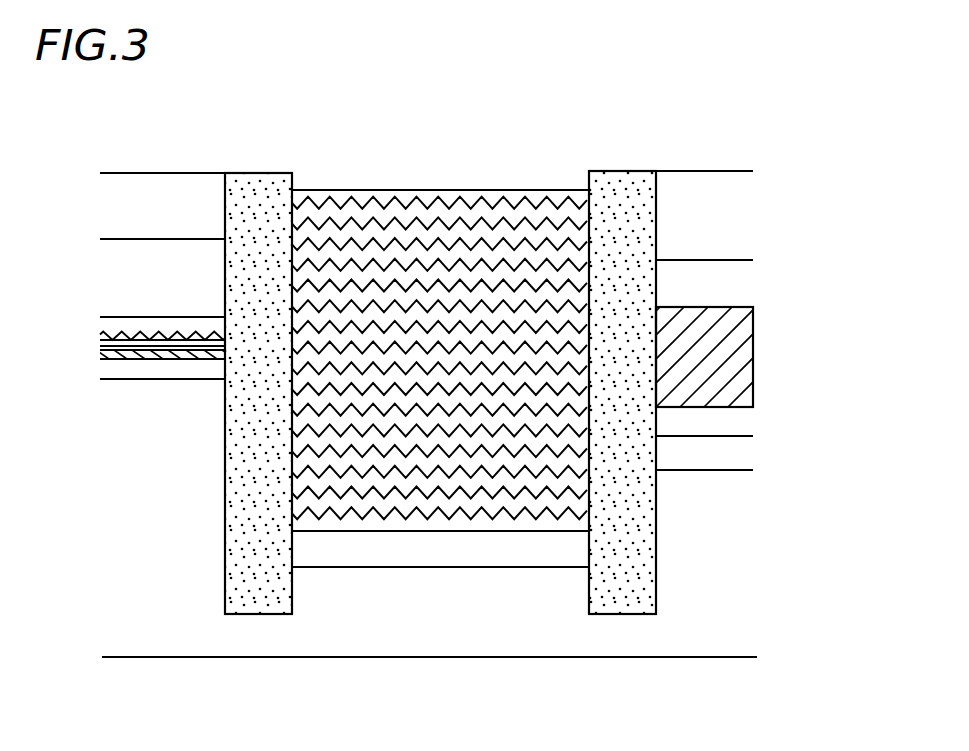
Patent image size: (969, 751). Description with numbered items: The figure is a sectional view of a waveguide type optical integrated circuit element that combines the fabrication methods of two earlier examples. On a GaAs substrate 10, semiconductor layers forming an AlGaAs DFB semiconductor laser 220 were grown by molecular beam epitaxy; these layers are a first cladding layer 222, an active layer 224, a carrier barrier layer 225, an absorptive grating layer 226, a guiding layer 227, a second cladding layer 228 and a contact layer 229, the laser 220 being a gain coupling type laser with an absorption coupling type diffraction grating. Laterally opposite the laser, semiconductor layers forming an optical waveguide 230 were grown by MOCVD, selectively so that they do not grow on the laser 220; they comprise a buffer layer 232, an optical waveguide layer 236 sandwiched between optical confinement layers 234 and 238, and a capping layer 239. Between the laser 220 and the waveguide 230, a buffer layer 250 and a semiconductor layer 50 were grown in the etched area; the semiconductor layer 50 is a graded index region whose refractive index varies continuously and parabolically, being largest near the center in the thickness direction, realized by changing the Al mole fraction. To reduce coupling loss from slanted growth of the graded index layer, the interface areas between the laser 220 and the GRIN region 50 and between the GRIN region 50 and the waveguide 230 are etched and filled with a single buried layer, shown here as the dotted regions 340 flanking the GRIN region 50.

The GaAs substrate 10 is at (207, 634).
The semiconductor layer (graded index region) 50 is at (450, 205).
The semiconductor laser 220 is at (172, 142).
The first cladding layer 222 is at (115, 370).
The active layer 224 is at (105, 352).
The carrier barrier layer 225 is at (107, 342).
The absorptive grating layer 226 is at (100, 334).
The guiding layer 227 is at (108, 318).
The second cladding layer 228 is at (118, 268).
The contact layer 229 is at (122, 204).
The optical waveguide 230 is at (727, 141).
The buffer layer 232 is at (745, 453).
The optical confinement layer 234 is at (742, 425).
The optical waveguide layer 236 is at (740, 355).
The optical confinement layer 238 is at (737, 278).
The capping layer 239 is at (730, 215).
The buffer layer 250 is at (548, 553).
The insulating wall 340 is at (270, 183).